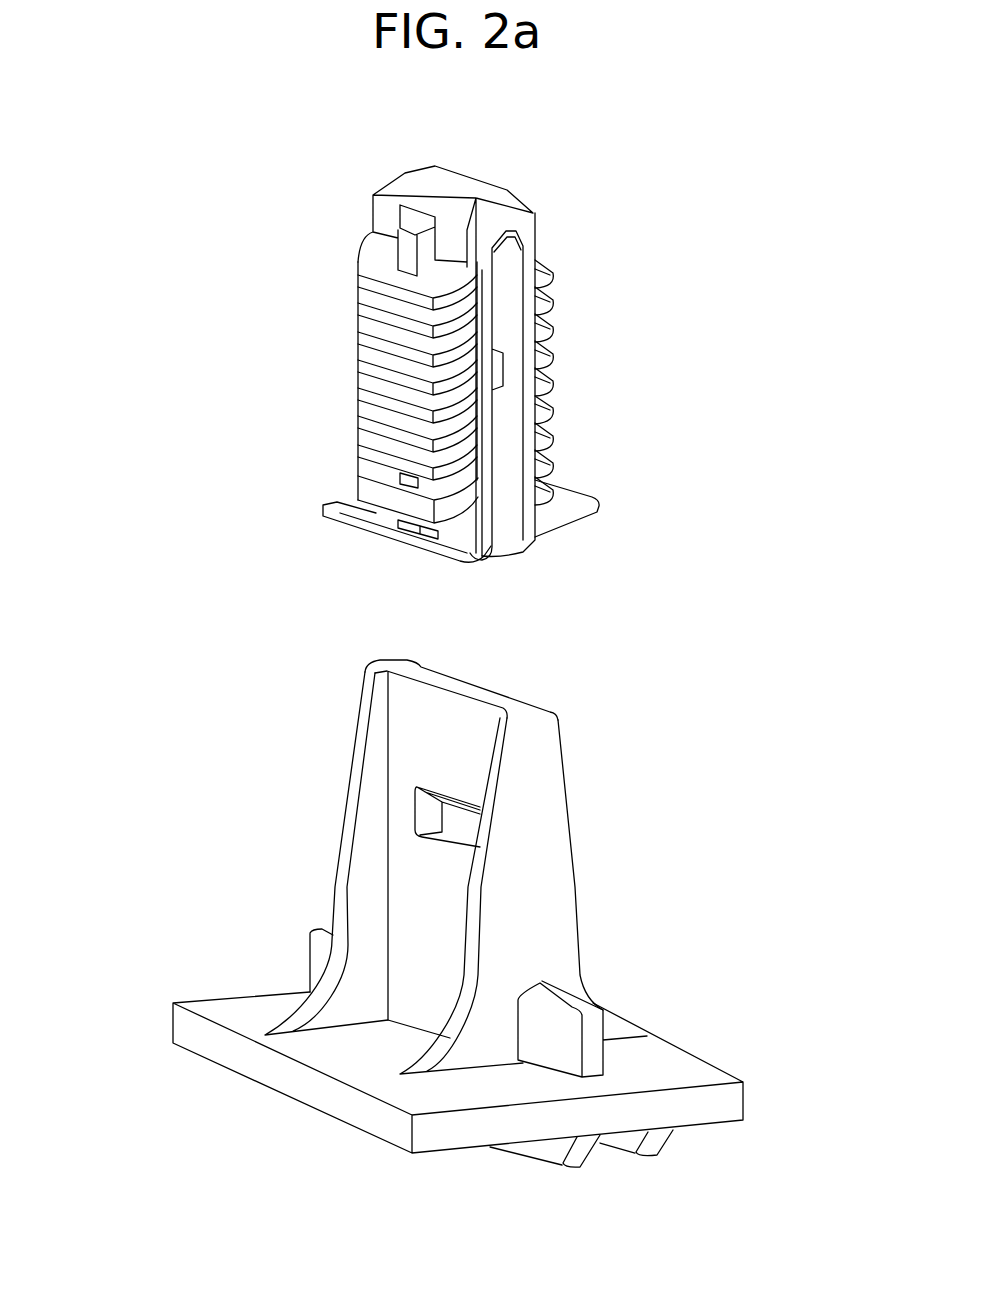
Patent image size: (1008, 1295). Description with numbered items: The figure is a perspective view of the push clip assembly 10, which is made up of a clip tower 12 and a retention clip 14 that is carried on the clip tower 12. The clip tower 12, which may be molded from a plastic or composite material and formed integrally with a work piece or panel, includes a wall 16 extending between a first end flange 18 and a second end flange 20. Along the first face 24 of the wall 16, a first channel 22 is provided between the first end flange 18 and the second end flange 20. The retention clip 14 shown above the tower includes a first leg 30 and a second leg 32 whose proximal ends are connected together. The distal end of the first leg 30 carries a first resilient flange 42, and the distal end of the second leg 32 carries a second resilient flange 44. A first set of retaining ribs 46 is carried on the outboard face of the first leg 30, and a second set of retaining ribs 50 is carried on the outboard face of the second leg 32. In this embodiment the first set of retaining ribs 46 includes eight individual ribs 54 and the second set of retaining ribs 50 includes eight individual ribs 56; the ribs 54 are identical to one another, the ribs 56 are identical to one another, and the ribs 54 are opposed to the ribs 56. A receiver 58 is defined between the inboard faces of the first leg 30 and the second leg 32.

The push clip assembly 10 is at (780, 194).
The clip tower 12 is at (180, 1086).
The retention clip 14 is at (312, 451).
The wall 16 is at (483, 695).
The first end flange 18 is at (353, 770).
The second end flange 20 is at (545, 842).
The first channel 22 is at (371, 871).
The first face 24 is at (420, 973).
The first leg 30 is at (490, 294).
The second leg 32 is at (553, 332).
The first resilient flange 42 is at (418, 537).
The second resilient flange 44 is at (582, 518).
The first set of retaining ribs 46 is at (313, 308).
The second set of retaining ribs 50 is at (586, 296).
The individual ribs 54 is at (370, 383).
The individual ribs 56 is at (553, 364).
The receiver 58 is at (508, 415).